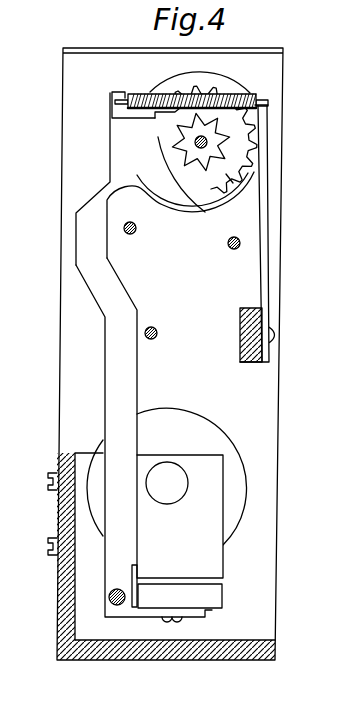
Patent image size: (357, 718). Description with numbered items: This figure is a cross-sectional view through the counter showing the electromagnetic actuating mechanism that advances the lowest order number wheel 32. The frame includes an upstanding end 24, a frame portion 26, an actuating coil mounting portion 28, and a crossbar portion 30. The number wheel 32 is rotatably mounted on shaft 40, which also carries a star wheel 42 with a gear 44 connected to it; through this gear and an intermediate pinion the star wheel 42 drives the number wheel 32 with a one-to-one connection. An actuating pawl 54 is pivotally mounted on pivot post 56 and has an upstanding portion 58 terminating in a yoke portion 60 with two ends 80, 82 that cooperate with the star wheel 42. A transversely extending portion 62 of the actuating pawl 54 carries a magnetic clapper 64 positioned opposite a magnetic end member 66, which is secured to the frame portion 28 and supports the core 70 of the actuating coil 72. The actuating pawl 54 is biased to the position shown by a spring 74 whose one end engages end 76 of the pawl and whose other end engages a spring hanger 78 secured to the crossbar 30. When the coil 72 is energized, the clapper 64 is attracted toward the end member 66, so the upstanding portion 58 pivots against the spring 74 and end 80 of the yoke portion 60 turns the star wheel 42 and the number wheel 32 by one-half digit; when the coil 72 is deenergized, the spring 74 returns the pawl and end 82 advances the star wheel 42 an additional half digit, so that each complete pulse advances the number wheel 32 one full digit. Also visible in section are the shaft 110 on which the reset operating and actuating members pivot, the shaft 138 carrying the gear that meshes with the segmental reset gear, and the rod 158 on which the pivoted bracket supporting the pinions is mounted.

The upstanding end 24 is at (283, 75).
The bottom wall 26 is at (193, 660).
The actuating coil mounting portion 28 is at (72, 595).
The crossbar portion 30 is at (257, 352).
The lowest order number wheel 32 is at (227, 80).
The shaft 40 is at (195, 144).
The star wheel 42 is at (219, 163).
The gear 44 is at (237, 145).
The actuating pawl 54 is at (100, 325).
The pivot post 56 is at (108, 598).
The upstanding portion 58 is at (87, 240).
The yoke portion 60 is at (187, 192).
The transversely extending portion 62 is at (148, 612).
The magnetic clapper 64 is at (222, 593).
The magnetic end member 66 is at (210, 512).
The core 70 is at (182, 478).
The actuating coil 72 is at (187, 418).
The spring 74 is at (138, 118).
The end 76 is at (115, 93).
The spring hanger 78 is at (273, 210).
The end 80 is at (230, 177).
The end 82 is at (158, 136).
The shaft 110 is at (133, 233).
The shaft 138 is at (153, 328).
The rod 158 is at (235, 250).